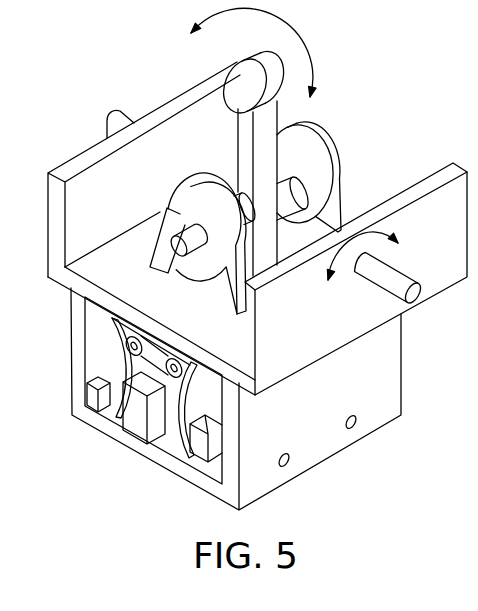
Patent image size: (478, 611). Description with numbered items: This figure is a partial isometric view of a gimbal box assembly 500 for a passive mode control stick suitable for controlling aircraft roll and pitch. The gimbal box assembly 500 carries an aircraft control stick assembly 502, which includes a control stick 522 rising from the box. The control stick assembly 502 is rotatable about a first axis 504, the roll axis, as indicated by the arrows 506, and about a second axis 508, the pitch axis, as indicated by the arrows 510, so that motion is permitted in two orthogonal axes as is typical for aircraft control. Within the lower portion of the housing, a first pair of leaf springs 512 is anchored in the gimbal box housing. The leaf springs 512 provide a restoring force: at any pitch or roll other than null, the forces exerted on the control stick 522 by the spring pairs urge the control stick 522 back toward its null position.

The gimbal box assembly 500 is at (402, 350).
The aircraft control stick assembly 502 is at (316, 190).
The first axis 504 is at (188, 230).
The arrows 506 is at (293, 46).
The second axis 508 is at (387, 283).
The arrows 510 is at (398, 243).
The leaf springs 512 is at (125, 373).
The control stick 522 is at (239, 152).